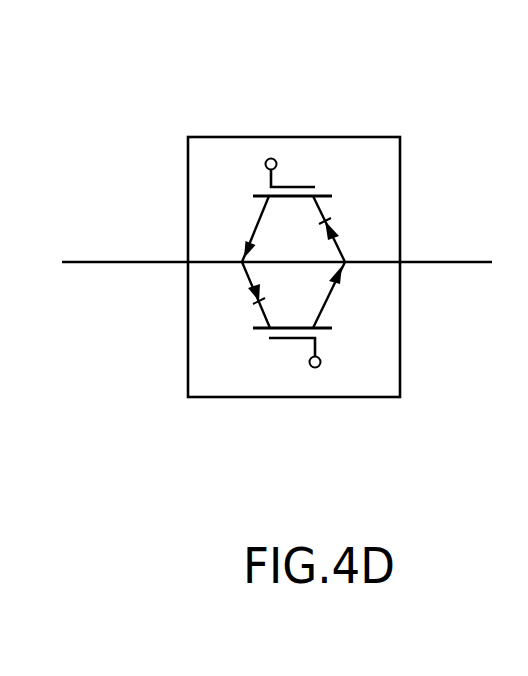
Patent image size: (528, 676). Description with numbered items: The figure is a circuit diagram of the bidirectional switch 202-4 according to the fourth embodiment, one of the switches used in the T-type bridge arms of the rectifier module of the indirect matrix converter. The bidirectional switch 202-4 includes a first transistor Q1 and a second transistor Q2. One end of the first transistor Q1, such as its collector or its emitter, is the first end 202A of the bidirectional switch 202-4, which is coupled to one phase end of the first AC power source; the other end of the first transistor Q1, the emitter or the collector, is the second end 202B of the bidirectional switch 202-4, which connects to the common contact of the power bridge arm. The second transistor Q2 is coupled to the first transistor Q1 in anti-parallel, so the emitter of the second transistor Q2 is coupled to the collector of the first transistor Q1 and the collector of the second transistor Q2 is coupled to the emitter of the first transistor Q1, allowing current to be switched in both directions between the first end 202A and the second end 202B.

The bidirectional switch 202-4 is at (294, 214).
The first end 202A is at (148, 262).
The second end 202B is at (445, 262).
The first transistor Q1 is at (293, 207).
The second transistor Q2 is at (293, 323).